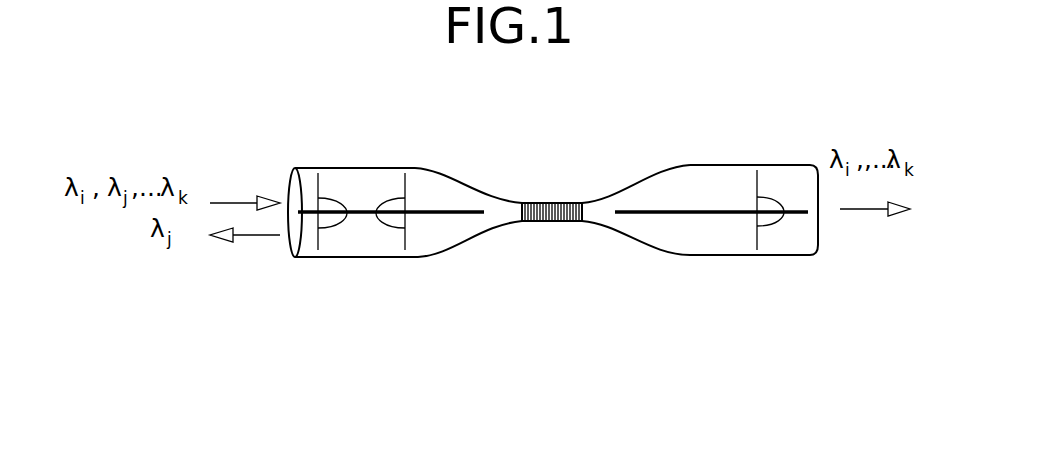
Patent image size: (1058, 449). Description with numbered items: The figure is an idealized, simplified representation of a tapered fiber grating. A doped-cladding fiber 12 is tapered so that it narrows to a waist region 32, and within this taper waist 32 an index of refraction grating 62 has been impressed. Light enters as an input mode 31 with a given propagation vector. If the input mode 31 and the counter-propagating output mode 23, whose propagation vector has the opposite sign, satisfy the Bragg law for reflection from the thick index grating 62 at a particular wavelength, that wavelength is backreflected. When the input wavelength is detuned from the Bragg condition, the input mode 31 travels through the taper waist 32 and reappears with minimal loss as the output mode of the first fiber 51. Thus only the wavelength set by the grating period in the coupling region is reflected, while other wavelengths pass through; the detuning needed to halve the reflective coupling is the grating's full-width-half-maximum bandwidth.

The fiber 12 is at (397, 168).
The waist region 32 is at (518, 200).
The index of refraction grating 62 is at (553, 203).
The input mode 31 is at (322, 230).
The output mode 23 is at (410, 235).
The output mode of the first fiber 51 is at (762, 230).